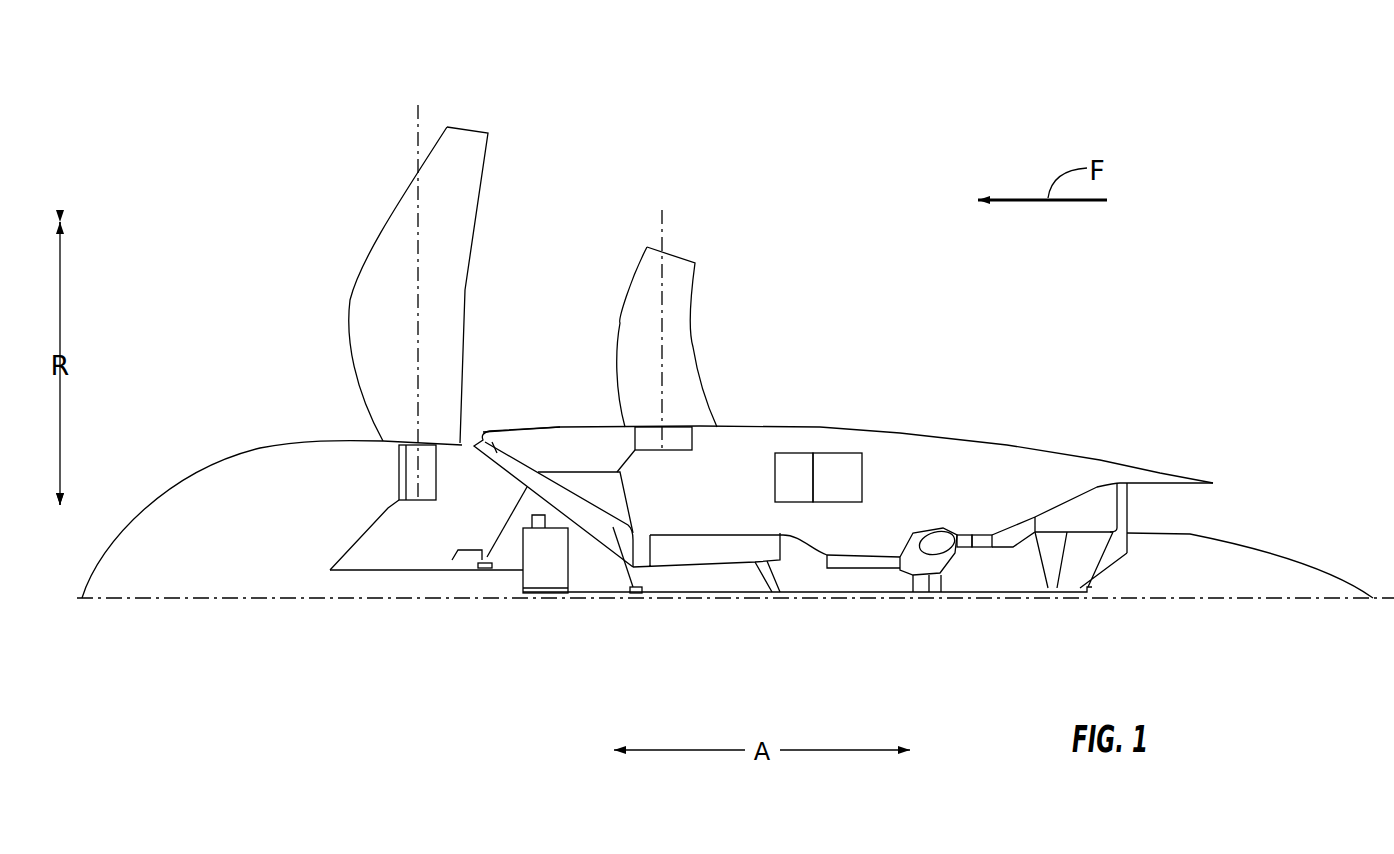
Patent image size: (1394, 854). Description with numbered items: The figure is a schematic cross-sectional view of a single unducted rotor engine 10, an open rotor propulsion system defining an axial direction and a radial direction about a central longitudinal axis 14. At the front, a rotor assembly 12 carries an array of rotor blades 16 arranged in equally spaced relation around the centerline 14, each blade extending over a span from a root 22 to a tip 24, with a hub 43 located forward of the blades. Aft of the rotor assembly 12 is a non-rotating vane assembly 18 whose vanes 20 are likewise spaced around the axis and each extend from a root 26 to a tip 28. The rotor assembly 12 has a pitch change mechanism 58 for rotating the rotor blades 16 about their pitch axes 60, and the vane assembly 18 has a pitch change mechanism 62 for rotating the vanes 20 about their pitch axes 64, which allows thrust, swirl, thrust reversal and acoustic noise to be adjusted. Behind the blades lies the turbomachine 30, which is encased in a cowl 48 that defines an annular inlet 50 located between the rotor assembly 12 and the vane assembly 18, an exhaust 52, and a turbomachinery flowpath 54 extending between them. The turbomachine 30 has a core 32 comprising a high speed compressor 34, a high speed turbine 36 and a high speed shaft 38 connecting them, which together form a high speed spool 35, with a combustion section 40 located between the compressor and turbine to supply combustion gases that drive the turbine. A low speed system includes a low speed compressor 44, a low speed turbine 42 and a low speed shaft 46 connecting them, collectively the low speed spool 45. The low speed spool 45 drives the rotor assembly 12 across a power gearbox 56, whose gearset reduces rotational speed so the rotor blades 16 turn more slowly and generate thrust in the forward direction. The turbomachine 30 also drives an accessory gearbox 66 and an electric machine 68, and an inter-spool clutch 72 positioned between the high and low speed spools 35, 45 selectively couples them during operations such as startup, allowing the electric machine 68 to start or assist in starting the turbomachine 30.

The single unducted rotor engine 10 is at (715, 90).
The rotor assembly 12 is at (265, 318).
The central longitudinal axis 14 is at (317, 600).
The rotor blades 16 is at (360, 262).
The vane assembly 18 is at (750, 188).
The vanes 20 is at (693, 347).
The root 22 is at (393, 430).
The tip 24 is at (475, 133).
The root 26 is at (703, 418).
The tip 28 is at (678, 252).
The turbomachine 30 is at (838, 395).
The core 32 is at (962, 488).
The high speed compressor 34 is at (875, 560).
The high speed spool 35 is at (902, 577).
The high speed turbine 36 is at (968, 545).
The high speed shaft 38 is at (942, 582).
The combustion section 40 is at (945, 545).
The low speed turbine 42 is at (1077, 500).
The hub 43 is at (200, 470).
The low speed compressor 44 is at (705, 545).
The low speed spool 45 is at (682, 619).
The low speed shaft 46 is at (828, 592).
The cowl 48 is at (1007, 445).
The inlet 50 is at (480, 418).
The exhaust 52 is at (1224, 510).
The turbomachinery flowpath 54 is at (610, 534).
The power gearbox 56 is at (545, 584).
The pitch change mechanism 58 is at (405, 481).
The pitch axes 60 is at (417, 142).
The pitch change mechanism 62 is at (675, 445).
The pitch axes 64 is at (662, 230).
The accessory gearbox 66 is at (795, 487).
The electric machine 68 is at (845, 478).
The inter-spool clutch 72 is at (922, 582).